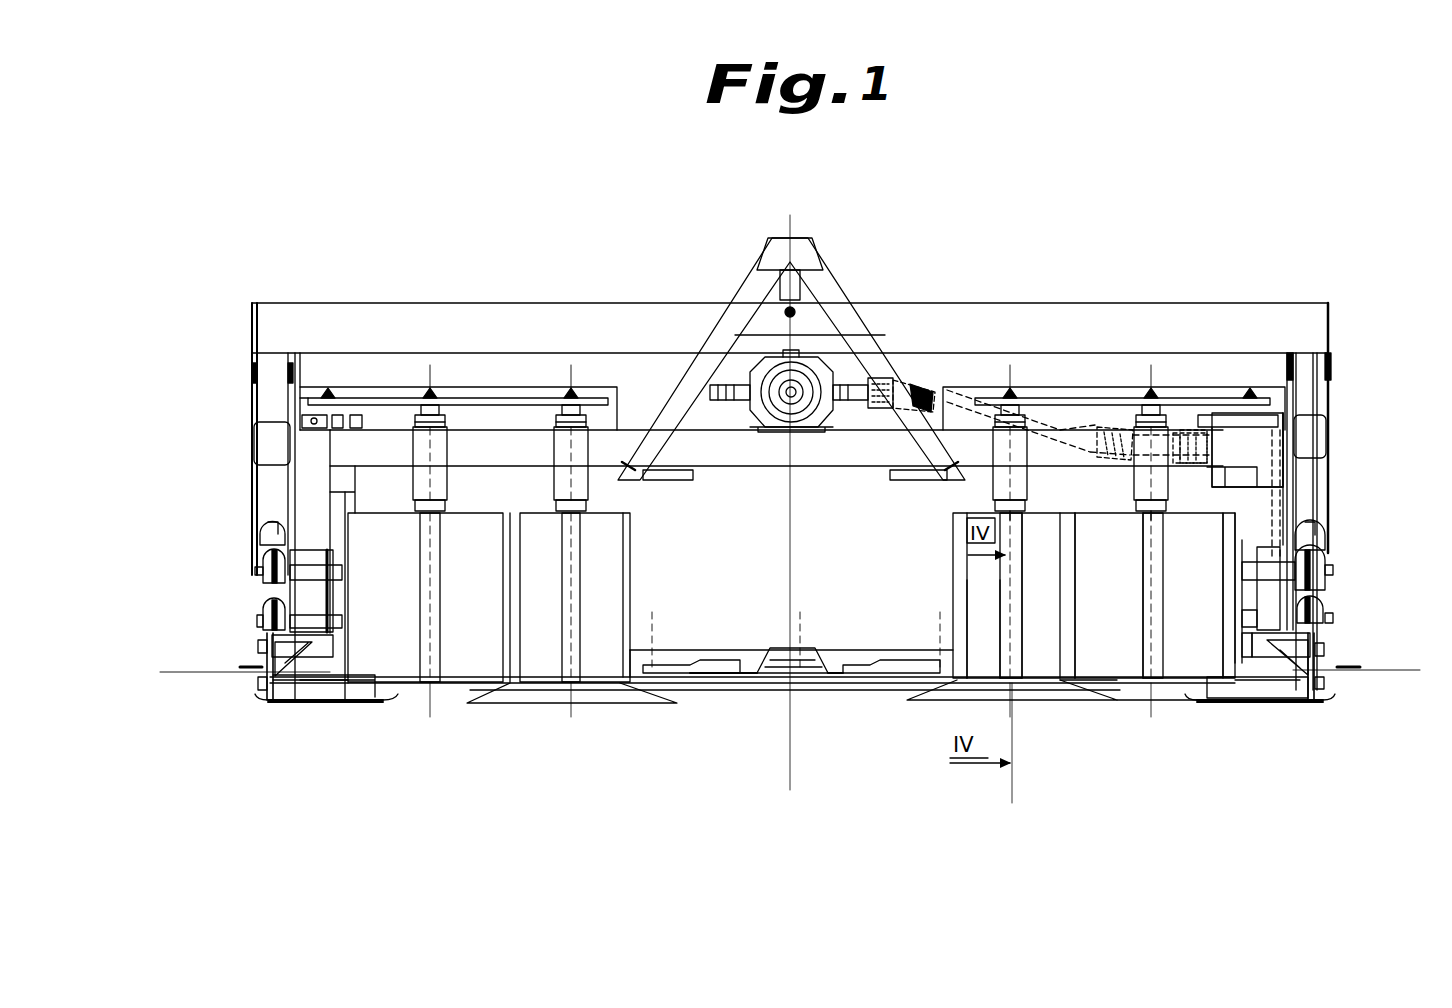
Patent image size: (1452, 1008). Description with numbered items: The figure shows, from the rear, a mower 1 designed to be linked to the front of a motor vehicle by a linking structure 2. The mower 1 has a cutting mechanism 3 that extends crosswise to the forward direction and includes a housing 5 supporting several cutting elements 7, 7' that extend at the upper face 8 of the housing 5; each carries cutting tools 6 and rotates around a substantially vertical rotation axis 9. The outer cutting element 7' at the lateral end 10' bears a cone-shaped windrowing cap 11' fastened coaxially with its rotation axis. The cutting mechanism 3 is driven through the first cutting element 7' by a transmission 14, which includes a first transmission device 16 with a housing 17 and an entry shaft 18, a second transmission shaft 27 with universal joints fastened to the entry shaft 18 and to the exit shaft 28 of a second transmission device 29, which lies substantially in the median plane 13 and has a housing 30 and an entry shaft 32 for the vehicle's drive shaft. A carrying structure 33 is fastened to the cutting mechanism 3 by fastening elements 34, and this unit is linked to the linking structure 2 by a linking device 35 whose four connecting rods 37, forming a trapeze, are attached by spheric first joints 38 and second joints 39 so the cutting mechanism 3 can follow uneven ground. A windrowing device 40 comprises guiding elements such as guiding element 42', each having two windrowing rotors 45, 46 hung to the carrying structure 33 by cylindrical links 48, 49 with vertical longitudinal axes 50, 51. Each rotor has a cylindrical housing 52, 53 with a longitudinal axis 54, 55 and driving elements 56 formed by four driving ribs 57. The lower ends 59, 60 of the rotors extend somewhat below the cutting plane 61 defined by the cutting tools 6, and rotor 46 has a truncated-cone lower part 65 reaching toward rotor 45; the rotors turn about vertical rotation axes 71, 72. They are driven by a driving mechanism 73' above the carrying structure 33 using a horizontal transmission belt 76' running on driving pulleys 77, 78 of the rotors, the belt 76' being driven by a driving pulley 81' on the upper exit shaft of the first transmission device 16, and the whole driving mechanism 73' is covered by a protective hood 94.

The mower 1 is at (1262, 170).
The linking structure 2 is at (1013, 300).
The cutting mechanism 3 is at (857, 700).
The housing 5 is at (710, 695).
The cutting tools 6 is at (752, 672).
The cutting element 7 is at (830, 627).
The first cutting element 7' is at (1333, 652).
The upper face 8 is at (655, 672).
The rotation axis 9 is at (652, 612).
The lateral end 10' is at (1403, 769).
The windrowing cap 11' is at (1200, 629).
The median plane 13 is at (790, 757).
The transmission 14 is at (1043, 222).
The first transmission device 16 is at (1315, 482).
The housing 17 is at (1297, 455).
The entry shaft 18 is at (1250, 437).
The second transmission shaft 27 is at (930, 405).
The exit shaft 28 is at (845, 380).
The second transmission device 29 is at (830, 375).
The housing 30 is at (745, 380).
The entry shaft 32 is at (810, 400).
The carrying structure 33 is at (722, 455).
The fastening elements 34 is at (262, 688).
The linking device 35 is at (500, 765).
The connecting rods 37 is at (292, 572).
The first joint 38 is at (265, 590).
The second joint 39 is at (270, 522).
The windrowing device 40 is at (778, 818).
The guiding element 42' is at (1085, 863).
The windrowing rotor 45 is at (1205, 700).
The windrowing rotor 46 is at (1060, 706).
The cylindrical link 48 is at (1160, 478).
The cylindrical link 49 is at (1017, 478).
The longitudinal axis 50 is at (1152, 372).
The longitudinal axis 51 is at (1012, 372).
The housing 52 is at (1097, 595).
The housing 53 is at (1018, 633).
The longitudinal axis 54 is at (1112, 700).
The longitudinal axis 55 is at (1010, 765).
The driving elements 56 is at (1140, 662).
The driving ribs 57 is at (1140, 558).
The lower end 59 is at (1078, 700).
The lower end 60 is at (958, 702).
The cutting plane 61 is at (1350, 672).
The lower part 65 is at (928, 700).
The rotation axis 71 is at (1157, 692).
The rotation axis 72 is at (1013, 735).
The driving mechanism 73' is at (1114, 320).
The transmission belt 76' is at (1040, 389).
The driving pulley 77 is at (1197, 402).
The driving pulley 78 is at (985, 398).
The driving pulley 81' is at (1286, 384).
The hood 94 is at (1210, 395).